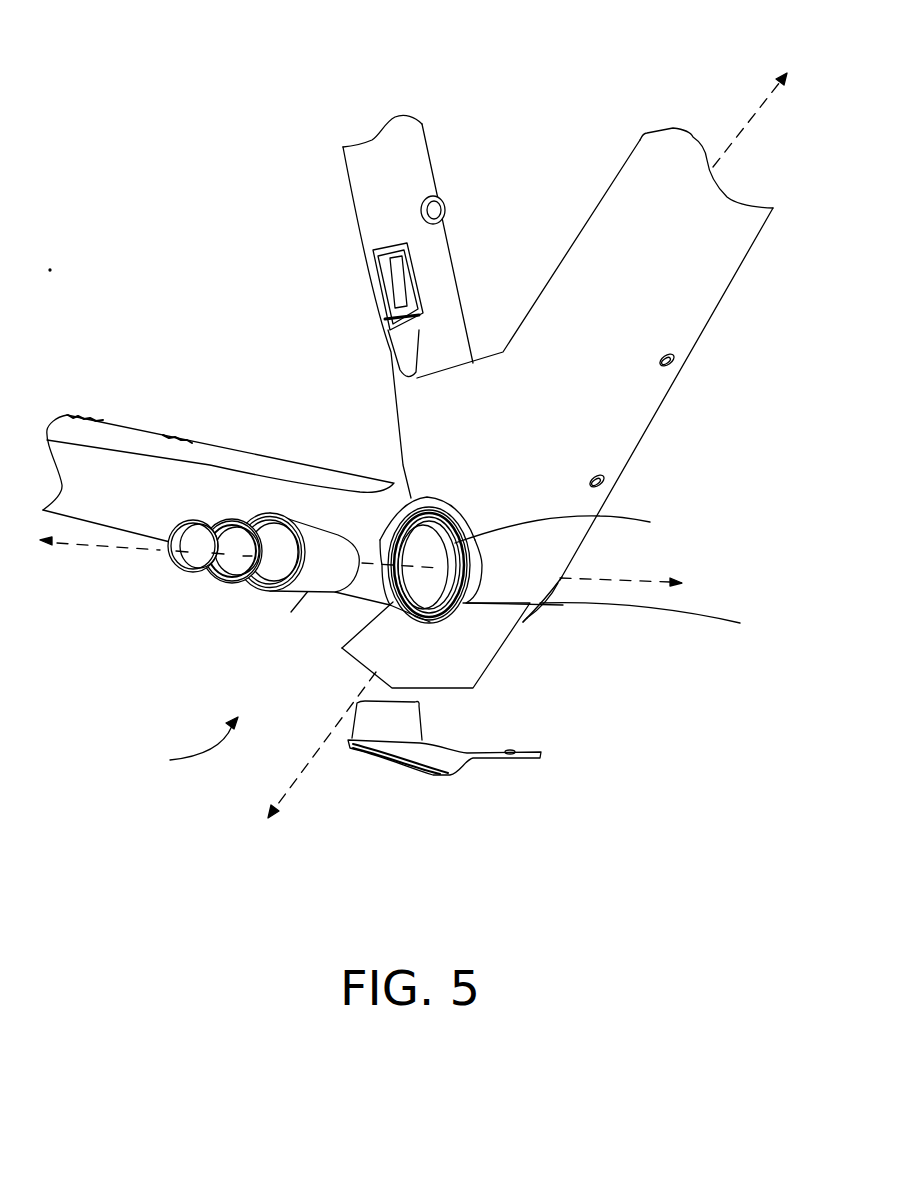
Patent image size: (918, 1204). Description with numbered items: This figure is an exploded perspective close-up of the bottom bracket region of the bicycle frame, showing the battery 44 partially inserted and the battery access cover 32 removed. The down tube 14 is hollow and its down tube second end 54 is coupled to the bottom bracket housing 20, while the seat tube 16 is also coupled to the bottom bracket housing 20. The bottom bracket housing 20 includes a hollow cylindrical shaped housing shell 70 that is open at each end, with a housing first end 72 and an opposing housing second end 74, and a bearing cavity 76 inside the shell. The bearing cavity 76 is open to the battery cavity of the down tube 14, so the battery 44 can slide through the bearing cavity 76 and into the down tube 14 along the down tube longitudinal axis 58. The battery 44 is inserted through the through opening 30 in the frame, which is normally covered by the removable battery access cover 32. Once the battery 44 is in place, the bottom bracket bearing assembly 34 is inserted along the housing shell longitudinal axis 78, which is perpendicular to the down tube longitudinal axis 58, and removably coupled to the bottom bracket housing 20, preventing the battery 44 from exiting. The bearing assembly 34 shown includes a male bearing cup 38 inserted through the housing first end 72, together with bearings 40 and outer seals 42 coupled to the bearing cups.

The down tube 14 is at (707, 300).
The seat tube 16 is at (421, 173).
The bottom bracket housing 20 is at (413, 504).
The through opening 30 is at (528, 630).
The battery access cover 32 is at (487, 767).
The bottom bracket bearing assembly 34 is at (188, 745).
The male bearing cup 38 is at (315, 583).
The bearings 40 is at (238, 584).
The outer seals 42 is at (195, 572).
The battery 44 is at (488, 660).
The down tube second end 54 is at (603, 428).
The down tube longitudinal axis 58 is at (743, 130).
The hollow cylindrical shaped housing shell 70 is at (390, 605).
The housing first end 72 is at (650, 522).
The housing second end 74 is at (740, 623).
The bearing cavity 76 is at (446, 549).
The housing shell longitudinal axis 78 is at (107, 545).